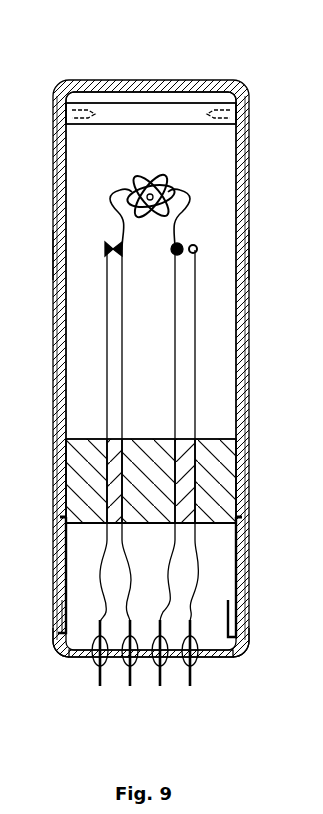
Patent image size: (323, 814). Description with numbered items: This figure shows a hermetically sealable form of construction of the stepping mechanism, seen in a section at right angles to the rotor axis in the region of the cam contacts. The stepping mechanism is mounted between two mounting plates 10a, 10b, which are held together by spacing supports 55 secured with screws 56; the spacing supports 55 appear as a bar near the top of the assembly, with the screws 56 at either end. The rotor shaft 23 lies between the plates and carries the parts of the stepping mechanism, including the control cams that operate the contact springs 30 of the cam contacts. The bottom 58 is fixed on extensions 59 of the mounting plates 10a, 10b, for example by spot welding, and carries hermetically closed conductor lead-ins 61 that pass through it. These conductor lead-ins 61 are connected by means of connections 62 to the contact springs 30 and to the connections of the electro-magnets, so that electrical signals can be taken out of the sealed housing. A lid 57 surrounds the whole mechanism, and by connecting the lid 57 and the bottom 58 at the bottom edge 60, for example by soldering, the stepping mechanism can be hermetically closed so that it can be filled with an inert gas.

The mounting plate 10a is at (248, 392).
The mounting plate 10b is at (62, 432).
The rotor shaft 23 is at (178, 192).
The contact spring 30 is at (194, 534).
The spacing support 55 is at (150, 103).
The screw 56 is at (62, 105).
The lid 57 is at (55, 255).
The bottom 58 is at (215, 658).
The extension 59 is at (62, 605).
The bottom edge 60 is at (55, 630).
The conductor lead-in 61 is at (95, 660).
The connection 62 is at (197, 576).